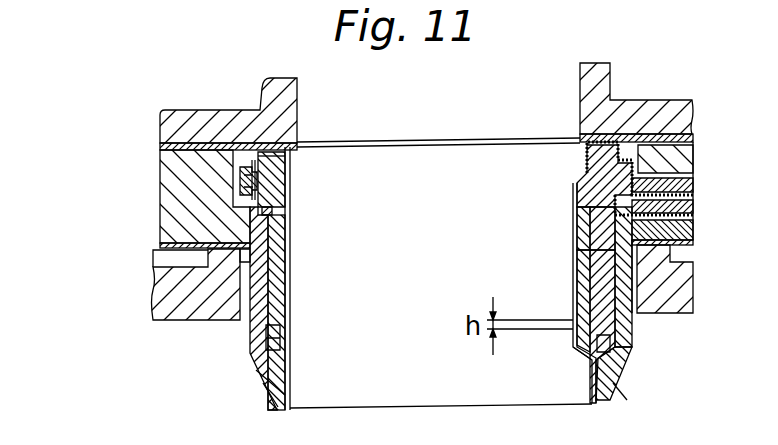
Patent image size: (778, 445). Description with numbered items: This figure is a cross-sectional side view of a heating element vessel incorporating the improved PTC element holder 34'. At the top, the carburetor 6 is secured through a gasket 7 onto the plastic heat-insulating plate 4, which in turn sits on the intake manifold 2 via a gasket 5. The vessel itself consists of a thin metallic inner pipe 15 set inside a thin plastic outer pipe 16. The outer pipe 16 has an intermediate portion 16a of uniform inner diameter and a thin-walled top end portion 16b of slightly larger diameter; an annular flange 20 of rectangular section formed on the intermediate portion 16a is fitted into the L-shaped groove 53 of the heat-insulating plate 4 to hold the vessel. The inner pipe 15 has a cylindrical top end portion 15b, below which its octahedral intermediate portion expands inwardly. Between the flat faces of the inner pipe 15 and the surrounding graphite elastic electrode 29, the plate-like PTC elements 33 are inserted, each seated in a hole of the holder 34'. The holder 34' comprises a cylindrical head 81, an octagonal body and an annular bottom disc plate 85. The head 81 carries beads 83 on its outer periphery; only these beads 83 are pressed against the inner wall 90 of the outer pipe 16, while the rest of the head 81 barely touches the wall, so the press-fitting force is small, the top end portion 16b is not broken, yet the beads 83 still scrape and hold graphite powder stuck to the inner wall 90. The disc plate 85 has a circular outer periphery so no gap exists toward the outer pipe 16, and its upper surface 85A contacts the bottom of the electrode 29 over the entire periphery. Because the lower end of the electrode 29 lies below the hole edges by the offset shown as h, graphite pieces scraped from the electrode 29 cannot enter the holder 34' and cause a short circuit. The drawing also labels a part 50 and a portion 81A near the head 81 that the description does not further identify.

The intake manifold 2 is at (153, 299).
The heat-insulating plate 4 is at (160, 183).
The gasket 5 is at (160, 245).
The carburetor 6 is at (618, 103).
The gasket 7 is at (163, 150).
The inner pipe 15 is at (576, 339).
The cylindrical top end portion 15b is at (590, 157).
The outer pipe 16 is at (267, 370).
The intermediate portion 16a is at (632, 331).
The top end portion 16b is at (235, 173).
The annular flange 20 is at (160, 258).
The elastic electrode 29 is at (273, 302).
The PTC element 33 is at (578, 213).
The PTC element holder 34' is at (314, 312).
The lower wall portion 50 is at (603, 263).
The groove 53 is at (240, 190).
The cylindrical head 81 is at (272, 187).
The seal holder lip 81A is at (266, 215).
The bead 83 is at (287, 181).
The annular bottom disc plate 85 is at (290, 357).
The upper surface 85A is at (263, 347).
The inner wall 90 is at (222, 252).